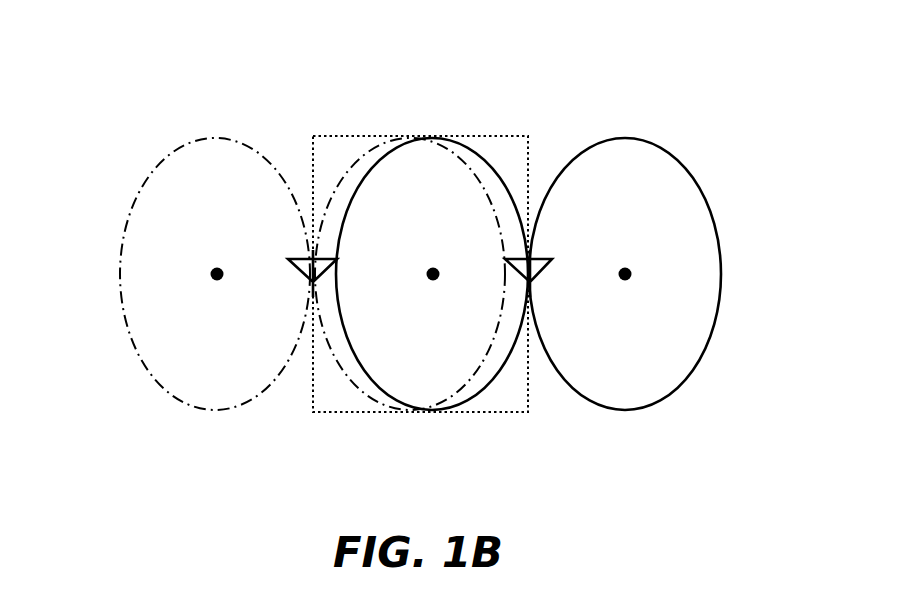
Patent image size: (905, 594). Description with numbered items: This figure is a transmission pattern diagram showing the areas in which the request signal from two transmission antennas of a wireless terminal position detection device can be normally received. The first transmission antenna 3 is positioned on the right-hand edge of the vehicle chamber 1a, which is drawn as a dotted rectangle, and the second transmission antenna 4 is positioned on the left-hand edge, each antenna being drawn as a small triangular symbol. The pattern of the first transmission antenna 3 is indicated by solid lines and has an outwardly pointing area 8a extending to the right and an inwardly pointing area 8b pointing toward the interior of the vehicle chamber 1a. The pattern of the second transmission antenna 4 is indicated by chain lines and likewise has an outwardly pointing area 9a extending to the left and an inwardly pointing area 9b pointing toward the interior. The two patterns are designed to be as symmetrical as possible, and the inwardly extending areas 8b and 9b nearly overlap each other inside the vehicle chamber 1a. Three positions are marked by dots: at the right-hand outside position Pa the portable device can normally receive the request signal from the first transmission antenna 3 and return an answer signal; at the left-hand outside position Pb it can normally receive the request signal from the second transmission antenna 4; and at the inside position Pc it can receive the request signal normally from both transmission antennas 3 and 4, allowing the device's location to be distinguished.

The outwardly pointing area 9a is at (157, 162).
The inwardly pointing area 9b is at (356, 162).
The outwardly pointing area 8a is at (688, 167).
The inwardly pointing area 8b is at (496, 170).
The vehicle chamber 1a is at (463, 132).
The first transmission antenna 3 is at (538, 242).
The second transmission antenna 4 is at (304, 250).
The right-hand outside position Pa is at (624, 281).
The left-hand outside position Pb is at (216, 281).
The inside position Pc is at (432, 281).